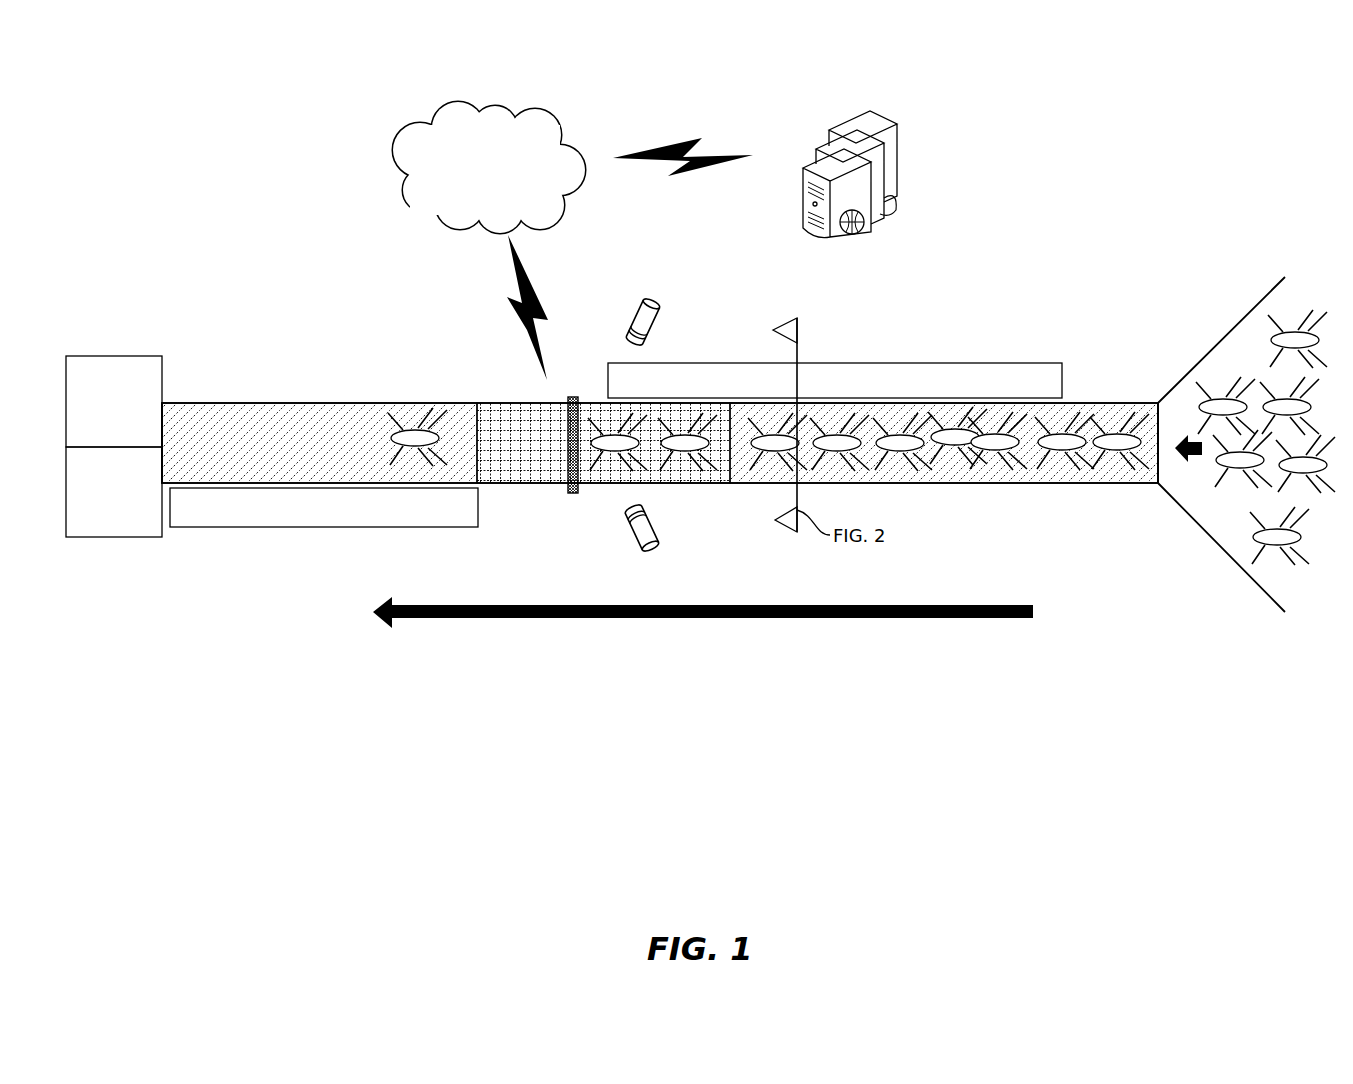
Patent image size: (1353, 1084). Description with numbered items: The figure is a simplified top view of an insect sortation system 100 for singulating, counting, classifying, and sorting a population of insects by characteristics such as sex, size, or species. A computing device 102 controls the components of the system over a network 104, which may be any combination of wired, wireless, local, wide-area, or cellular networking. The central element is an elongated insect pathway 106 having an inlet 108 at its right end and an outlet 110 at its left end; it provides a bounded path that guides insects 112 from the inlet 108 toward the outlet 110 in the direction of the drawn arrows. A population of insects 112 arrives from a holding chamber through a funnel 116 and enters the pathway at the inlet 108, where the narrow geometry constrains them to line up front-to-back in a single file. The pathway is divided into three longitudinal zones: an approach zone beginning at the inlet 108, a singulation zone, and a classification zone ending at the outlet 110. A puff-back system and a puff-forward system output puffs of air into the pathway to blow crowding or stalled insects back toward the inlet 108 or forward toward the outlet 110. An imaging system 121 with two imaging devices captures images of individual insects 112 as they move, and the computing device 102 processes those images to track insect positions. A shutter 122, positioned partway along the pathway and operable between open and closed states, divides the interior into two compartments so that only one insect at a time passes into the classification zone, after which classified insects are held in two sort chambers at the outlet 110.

The insect sortation system 100 is at (132, 95).
The computing device 102 is at (893, 200).
The network 104 is at (489, 167).
The insect pathway 106 is at (660, 419).
The inlet 108 is at (1155, 420).
The outlet 110 is at (165, 408).
The insects 112 is at (1243, 343).
The funnel 116 is at (1198, 367).
The imaging system 121 is at (618, 302).
The shutter 122 is at (572, 493).